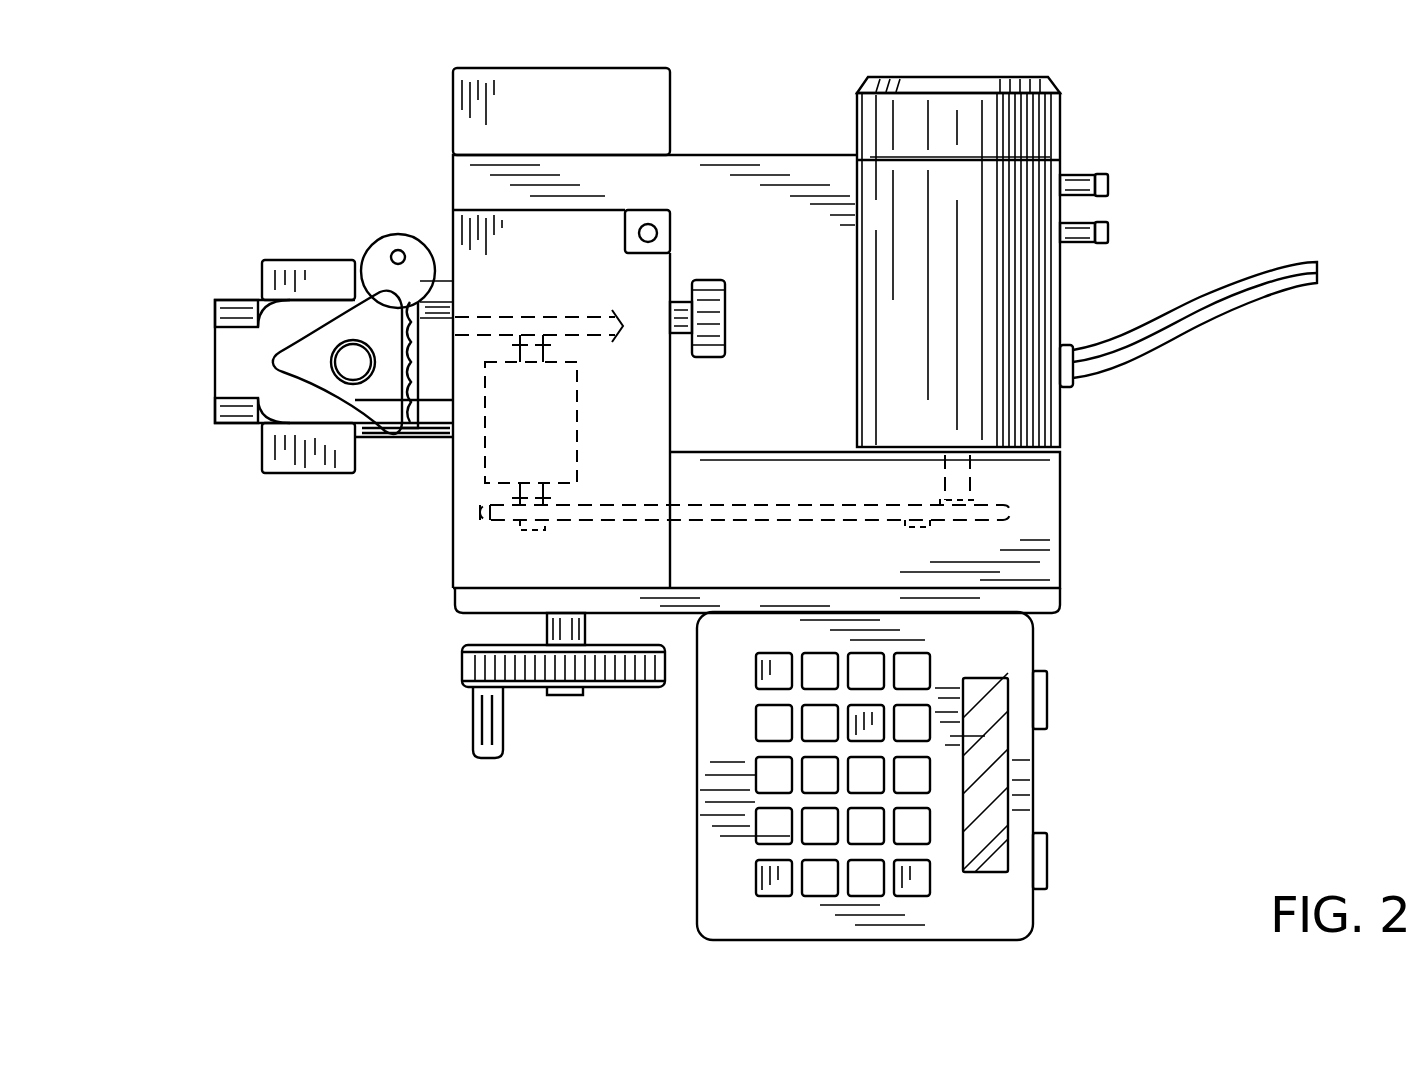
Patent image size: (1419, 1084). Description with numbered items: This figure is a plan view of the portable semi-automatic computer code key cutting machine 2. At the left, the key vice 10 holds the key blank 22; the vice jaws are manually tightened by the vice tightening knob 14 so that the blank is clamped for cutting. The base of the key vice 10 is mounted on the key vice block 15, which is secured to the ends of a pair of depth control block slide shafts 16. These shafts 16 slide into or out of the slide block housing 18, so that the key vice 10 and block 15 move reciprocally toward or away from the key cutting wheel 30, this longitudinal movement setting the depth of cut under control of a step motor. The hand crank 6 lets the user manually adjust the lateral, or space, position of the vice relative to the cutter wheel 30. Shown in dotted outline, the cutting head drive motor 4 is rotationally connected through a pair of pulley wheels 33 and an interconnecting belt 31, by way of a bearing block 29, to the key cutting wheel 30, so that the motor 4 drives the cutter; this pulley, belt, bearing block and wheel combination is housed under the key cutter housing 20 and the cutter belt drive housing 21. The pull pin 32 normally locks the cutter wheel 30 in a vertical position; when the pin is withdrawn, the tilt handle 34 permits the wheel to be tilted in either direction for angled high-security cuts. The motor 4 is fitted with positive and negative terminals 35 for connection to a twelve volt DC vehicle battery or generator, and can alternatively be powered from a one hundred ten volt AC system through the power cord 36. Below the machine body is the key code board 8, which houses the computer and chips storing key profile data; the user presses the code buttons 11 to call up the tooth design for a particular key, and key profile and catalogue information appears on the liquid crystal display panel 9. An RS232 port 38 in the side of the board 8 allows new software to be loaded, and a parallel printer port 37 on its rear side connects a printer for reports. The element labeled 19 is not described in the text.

The portable semi-automatic computer code key cutting machine 2 is at (1150, 435).
The cutting head drive motor 4 is at (1062, 298).
The hand crank 6 is at (462, 668).
The key code board 8 is at (872, 776).
The liquid crystal display panel 9 is at (990, 858).
The key vice 10 is at (229, 296).
The code buttons 11 is at (912, 672).
The vice tightening knob 14 is at (275, 350).
The key vice block 15 is at (262, 450).
The depth control block slide shafts 16 is at (452, 300).
The slide block housing 18 is at (455, 603).
The upper housing 19 is at (655, 108).
The key cutter housing 20 is at (655, 370).
The cutter belt drive housing 21 is at (1040, 540).
The key blank 22 is at (386, 236).
The bearing block 29 is at (560, 425).
The key cutting wheel 30 is at (520, 317).
The interconnecting belt 31 is at (718, 505).
The pull pin 32 is at (728, 295).
The pulley wheels 33 is at (556, 528).
The tilt handle 34 is at (660, 233).
The positive and negative terminals 35 is at (1083, 170).
The power cord 36 is at (1248, 308).
The parallel printer port 37 is at (1050, 698).
The RS232 port 38 is at (1050, 862).